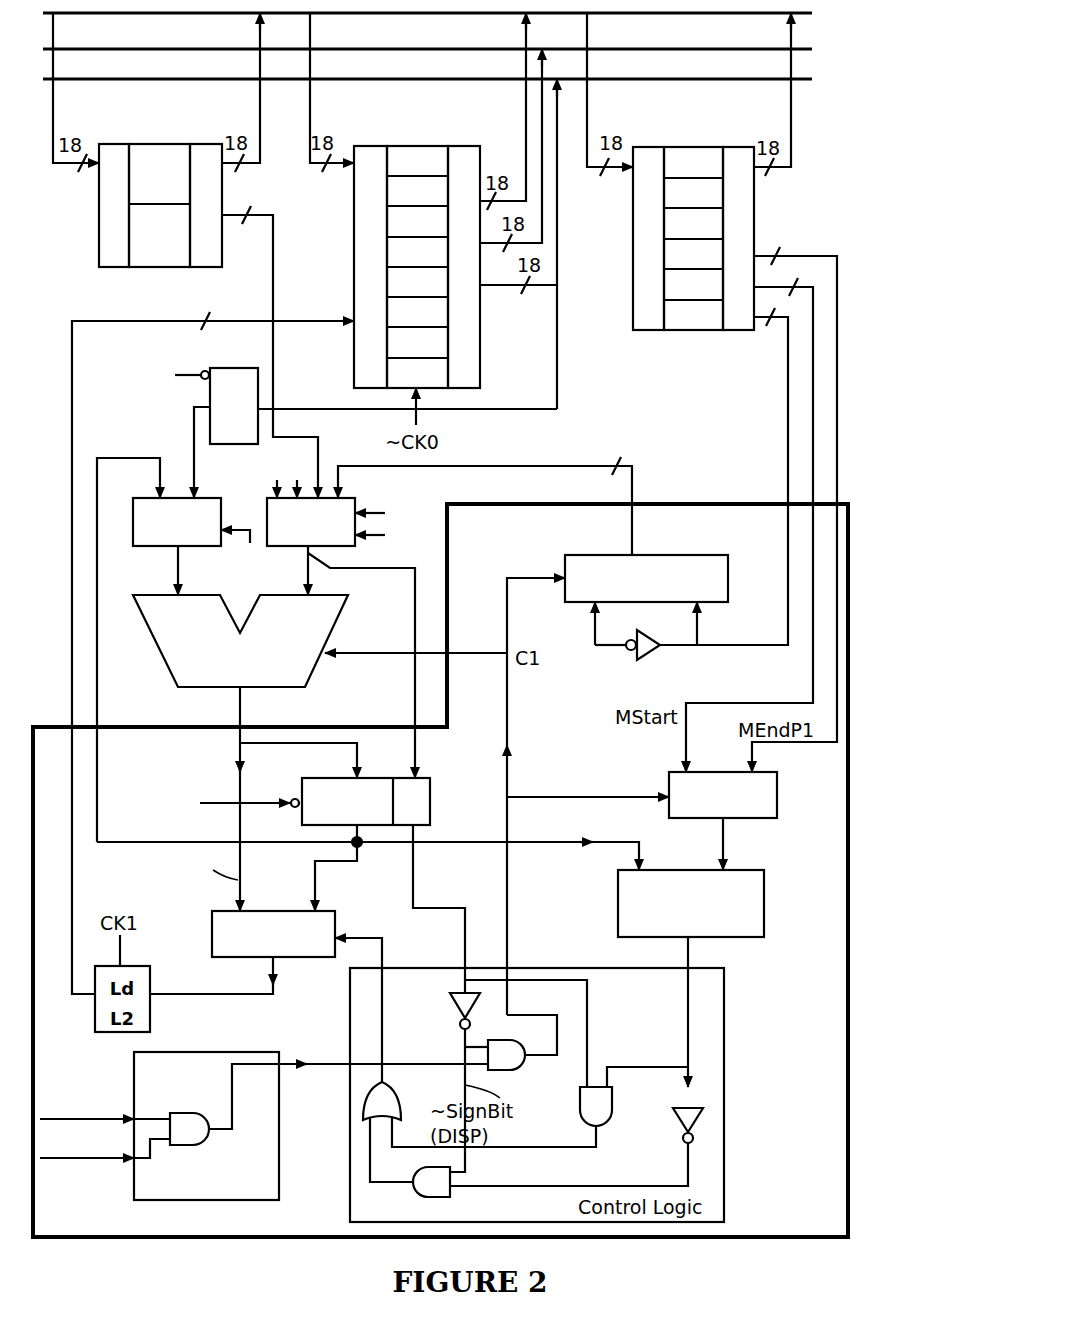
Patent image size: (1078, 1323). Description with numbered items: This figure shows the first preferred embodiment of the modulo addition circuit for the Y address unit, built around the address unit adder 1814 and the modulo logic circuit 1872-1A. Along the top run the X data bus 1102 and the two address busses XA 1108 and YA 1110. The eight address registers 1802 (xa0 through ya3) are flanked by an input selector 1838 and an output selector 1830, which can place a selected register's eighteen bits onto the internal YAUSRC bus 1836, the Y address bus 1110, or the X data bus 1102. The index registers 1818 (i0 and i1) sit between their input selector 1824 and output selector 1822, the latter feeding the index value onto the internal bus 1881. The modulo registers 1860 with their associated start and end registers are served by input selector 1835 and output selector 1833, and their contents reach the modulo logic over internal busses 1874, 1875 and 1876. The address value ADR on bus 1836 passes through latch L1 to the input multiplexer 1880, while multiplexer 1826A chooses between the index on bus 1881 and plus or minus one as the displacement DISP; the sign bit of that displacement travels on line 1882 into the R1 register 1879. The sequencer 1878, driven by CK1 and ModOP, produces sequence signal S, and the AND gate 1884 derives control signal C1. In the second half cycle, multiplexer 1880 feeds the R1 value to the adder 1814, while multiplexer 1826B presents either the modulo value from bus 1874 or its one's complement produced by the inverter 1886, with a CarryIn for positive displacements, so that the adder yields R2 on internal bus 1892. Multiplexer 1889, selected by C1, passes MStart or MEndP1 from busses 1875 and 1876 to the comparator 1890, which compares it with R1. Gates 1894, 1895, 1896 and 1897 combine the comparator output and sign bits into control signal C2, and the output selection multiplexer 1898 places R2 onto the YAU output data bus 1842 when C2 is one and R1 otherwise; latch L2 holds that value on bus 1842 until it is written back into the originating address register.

The X data bus 1102 is at (397, 15).
The X address bus 1108 is at (397, 51).
The Y address bus 1110 is at (397, 81).
The address registers 1802 is at (410, 145).
The index register 1818 is at (156, 143).
The selector 1822 is at (200, 143).
The selector 1824 is at (99, 232).
The selector 1830 is at (478, 310).
The selector 1833 is at (740, 146).
The selector 1835 is at (633, 225).
The internal YAUSRC bus 1836 is at (287, 408).
The selector 1838 is at (355, 250).
The YAU output data bus 1842 is at (165, 321).
The modulo register 1860 is at (697, 145).
The internal bus 1874 is at (788, 398).
The internal bus 1875 is at (813, 443).
The internal bus 1876 is at (837, 485).
The input multiplexer 1880 is at (136, 530).
The multiplexer portion 1826A is at (340, 498).
The multiplexer portion 1826B is at (665, 558).
The internal bus 1881 is at (275, 238).
The address unit adder 1814 is at (313, 675).
The inverter 1886 is at (648, 656).
The internal bus 1892 is at (240, 782).
The R1 register 1879 is at (345, 778).
The multiplexer 1889 is at (774, 788).
The comparator 1890 is at (748, 880).
The output selection multiplexer 1898 is at (330, 911).
The line 1882 is at (462, 950).
The sequencer 1878 is at (262, 1052).
The gate 1897 is at (427, 1094).
The AND gate 1884 is at (510, 1068).
The gate 1894 is at (672, 1118).
The gate 1895 is at (604, 1120).
The gate 1896 is at (440, 1197).
The modulo logic circuit 1872-1A is at (440, 870).